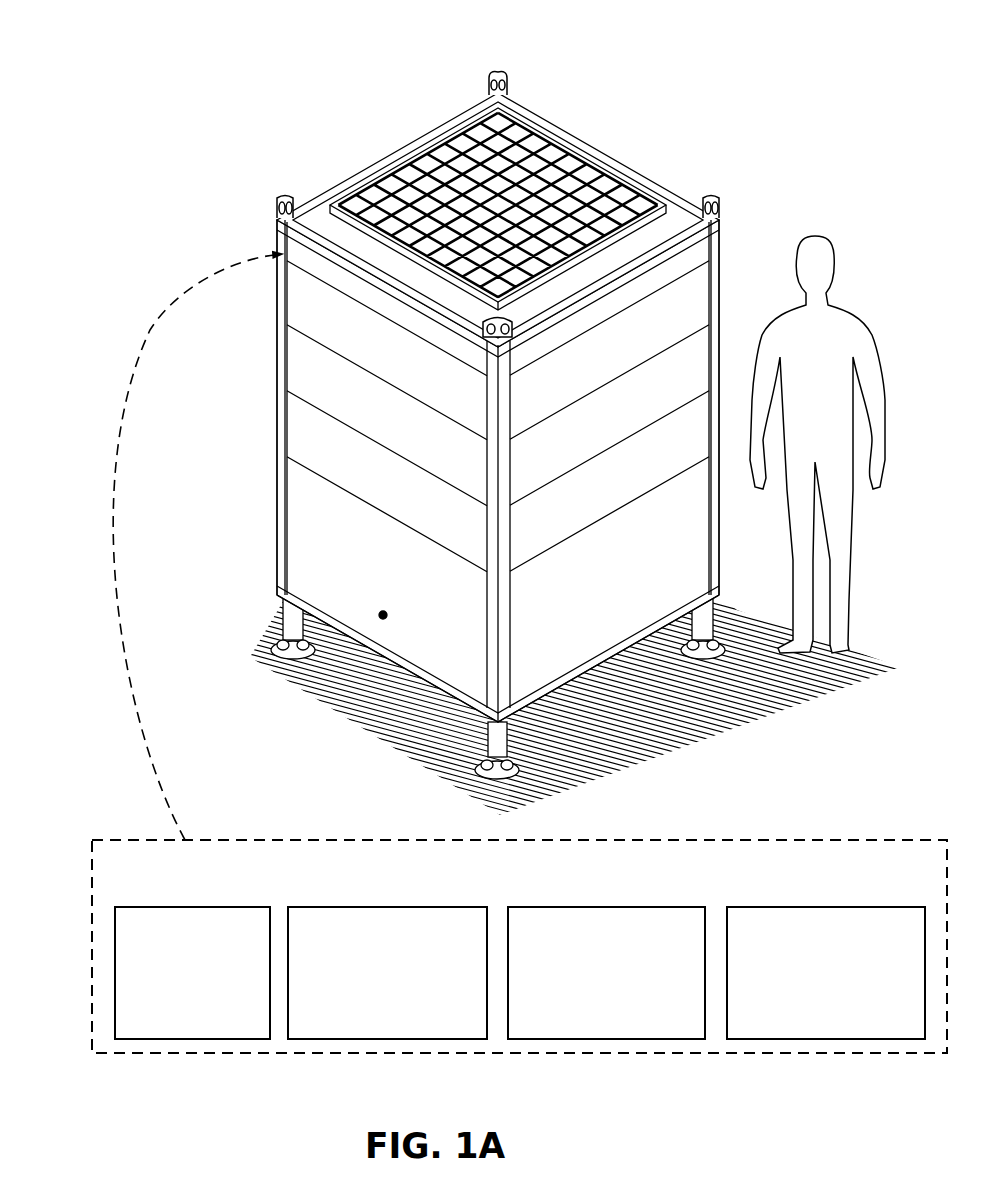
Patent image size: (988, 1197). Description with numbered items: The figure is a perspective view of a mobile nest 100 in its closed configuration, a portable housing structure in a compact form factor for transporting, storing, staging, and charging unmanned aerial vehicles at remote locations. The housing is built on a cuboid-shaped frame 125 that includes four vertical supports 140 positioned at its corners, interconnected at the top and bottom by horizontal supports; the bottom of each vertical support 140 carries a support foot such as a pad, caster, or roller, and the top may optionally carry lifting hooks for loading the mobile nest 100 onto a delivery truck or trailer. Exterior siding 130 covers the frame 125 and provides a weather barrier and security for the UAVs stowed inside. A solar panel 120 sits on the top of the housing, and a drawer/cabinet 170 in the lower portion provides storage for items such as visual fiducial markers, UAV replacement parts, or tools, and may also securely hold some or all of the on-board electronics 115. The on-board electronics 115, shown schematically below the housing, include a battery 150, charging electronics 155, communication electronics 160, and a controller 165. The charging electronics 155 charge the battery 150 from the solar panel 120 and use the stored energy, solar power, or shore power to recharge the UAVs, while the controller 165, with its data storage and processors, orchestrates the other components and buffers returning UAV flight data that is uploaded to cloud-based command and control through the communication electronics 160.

The mobile nest 100 is at (95, 66).
The on-board electronics 115 is at (587, 874).
The solar panel 120 is at (516, 216).
The cuboid-shaped frame 125 is at (253, 242).
The exterior siding 130 is at (700, 305).
The vertical supports 140 is at (285, 380).
The battery 150 is at (207, 999).
The charging electronics 155 is at (403, 1009).
The communication electronics 160 is at (622, 1009).
The controller 165 is at (841, 994).
The drawer/cabinet 170 is at (453, 653).